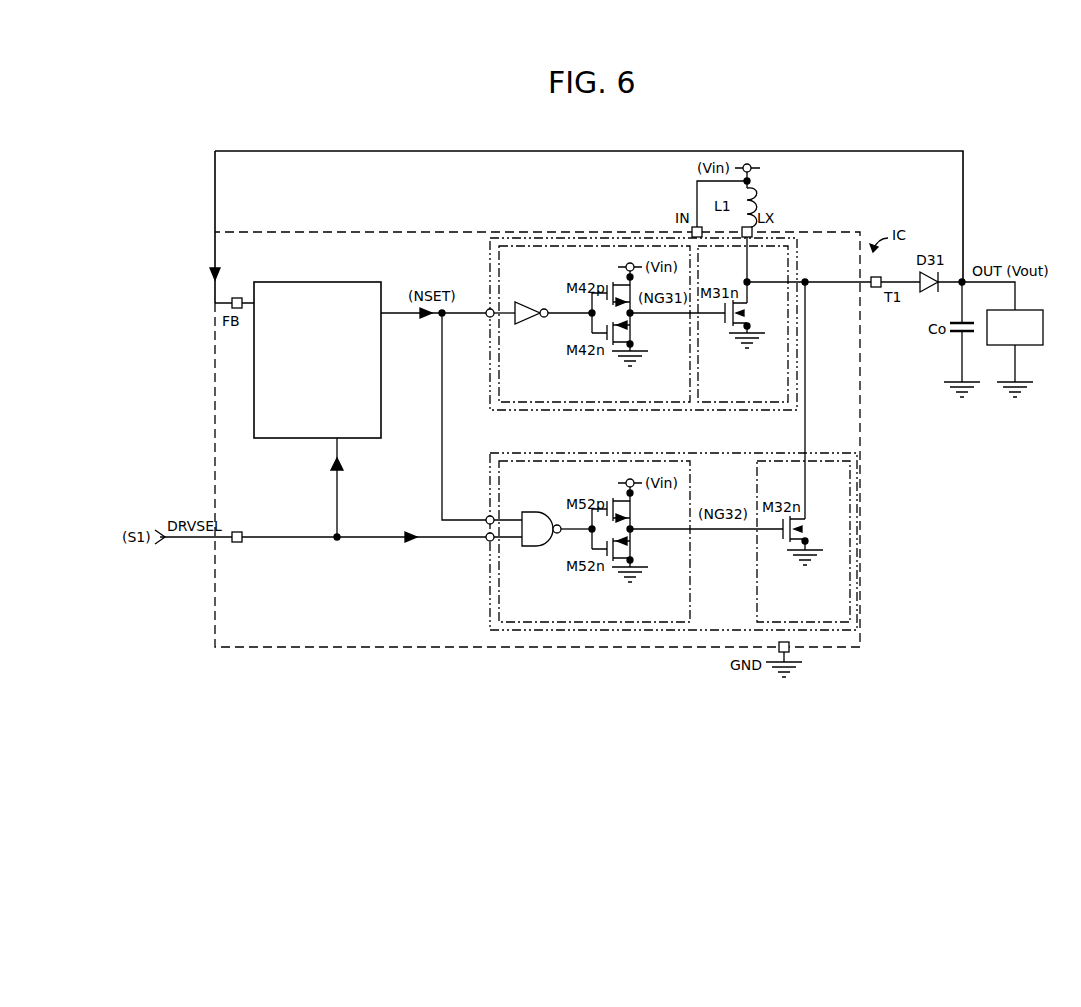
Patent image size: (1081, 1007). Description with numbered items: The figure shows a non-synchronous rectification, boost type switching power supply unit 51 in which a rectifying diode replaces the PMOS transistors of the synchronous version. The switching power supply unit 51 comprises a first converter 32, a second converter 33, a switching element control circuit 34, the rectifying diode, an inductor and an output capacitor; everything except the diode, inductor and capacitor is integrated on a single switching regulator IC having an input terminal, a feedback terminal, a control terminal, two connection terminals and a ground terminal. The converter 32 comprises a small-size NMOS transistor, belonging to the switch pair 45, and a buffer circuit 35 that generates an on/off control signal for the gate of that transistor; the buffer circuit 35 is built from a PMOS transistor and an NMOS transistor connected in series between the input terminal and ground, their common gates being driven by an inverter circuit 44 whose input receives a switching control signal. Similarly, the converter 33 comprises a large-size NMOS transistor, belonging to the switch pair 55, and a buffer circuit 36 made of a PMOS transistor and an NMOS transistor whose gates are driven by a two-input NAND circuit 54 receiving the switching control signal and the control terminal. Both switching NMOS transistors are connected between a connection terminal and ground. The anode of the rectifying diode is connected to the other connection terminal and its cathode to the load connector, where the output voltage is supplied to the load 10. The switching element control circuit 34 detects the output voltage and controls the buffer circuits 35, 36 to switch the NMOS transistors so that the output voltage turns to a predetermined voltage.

The switching power supply unit 51 is at (892, 140).
The switching element control circuit 34 is at (360, 282).
The converter 32 is at (487, 247).
The buffer circuit 35 is at (608, 238).
The switch pair 45 is at (779, 246).
The buffer circuit 36 is at (612, 461).
The converter 33 is at (488, 616).
The switch pair 55 is at (825, 461).
The inverter circuit 44 is at (527, 325).
The NAND circuit 54 is at (533, 546).
The load 10 is at (1030, 345).